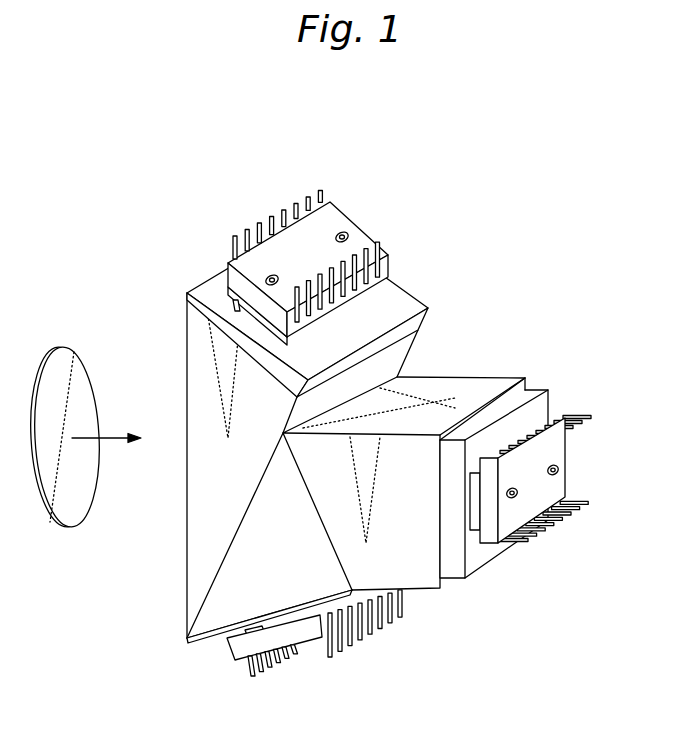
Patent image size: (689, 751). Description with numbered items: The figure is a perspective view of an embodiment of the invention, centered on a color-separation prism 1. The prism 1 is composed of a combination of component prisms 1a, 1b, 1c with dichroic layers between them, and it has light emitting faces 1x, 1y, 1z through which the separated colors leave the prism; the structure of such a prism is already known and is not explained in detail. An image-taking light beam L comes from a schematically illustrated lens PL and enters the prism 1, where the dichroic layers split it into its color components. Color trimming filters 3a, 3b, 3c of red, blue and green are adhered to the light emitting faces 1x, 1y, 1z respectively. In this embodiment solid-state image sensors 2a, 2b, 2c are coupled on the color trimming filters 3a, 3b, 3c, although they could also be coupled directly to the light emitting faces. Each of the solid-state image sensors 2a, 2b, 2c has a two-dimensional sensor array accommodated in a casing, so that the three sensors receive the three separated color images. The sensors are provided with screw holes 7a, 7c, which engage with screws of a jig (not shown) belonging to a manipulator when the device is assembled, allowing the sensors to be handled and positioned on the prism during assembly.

The color-separation prism 1 is at (338, 447).
The component prism 1a is at (202, 402).
The component prism 1b is at (220, 550).
The component prism 1c is at (442, 387).
The light emitting face 1x is at (200, 312).
The light emitting face 1y is at (497, 390).
The light emitting face 1z is at (220, 626).
The solid-state image sensor 2a is at (303, 226).
The solid-state image sensor 2b is at (295, 630).
The solid-state image sensor 2c is at (555, 500).
The color trimming filter 3a is at (385, 302).
The color trimming filter 3b is at (207, 633).
The color trimming filter 3c is at (482, 557).
The screw hole 7a is at (344, 232).
The screw hole 7c is at (515, 497).
The image-taking light beam L is at (113, 442).
The lens PL is at (60, 510).